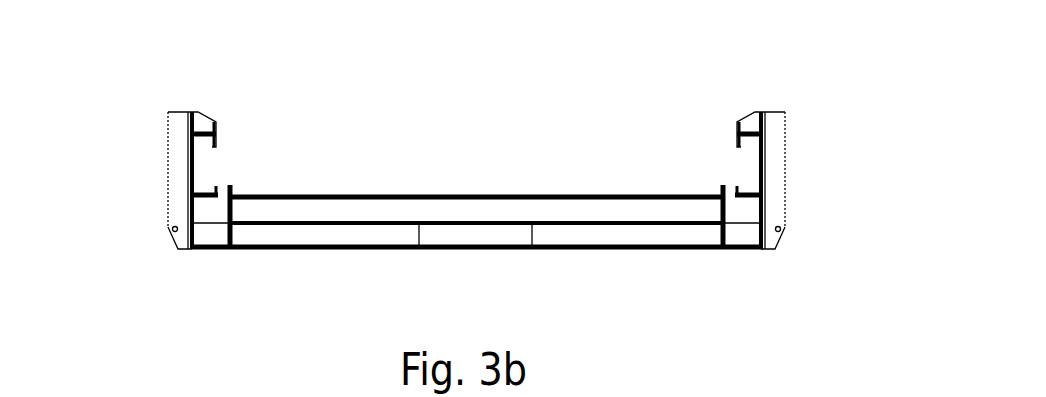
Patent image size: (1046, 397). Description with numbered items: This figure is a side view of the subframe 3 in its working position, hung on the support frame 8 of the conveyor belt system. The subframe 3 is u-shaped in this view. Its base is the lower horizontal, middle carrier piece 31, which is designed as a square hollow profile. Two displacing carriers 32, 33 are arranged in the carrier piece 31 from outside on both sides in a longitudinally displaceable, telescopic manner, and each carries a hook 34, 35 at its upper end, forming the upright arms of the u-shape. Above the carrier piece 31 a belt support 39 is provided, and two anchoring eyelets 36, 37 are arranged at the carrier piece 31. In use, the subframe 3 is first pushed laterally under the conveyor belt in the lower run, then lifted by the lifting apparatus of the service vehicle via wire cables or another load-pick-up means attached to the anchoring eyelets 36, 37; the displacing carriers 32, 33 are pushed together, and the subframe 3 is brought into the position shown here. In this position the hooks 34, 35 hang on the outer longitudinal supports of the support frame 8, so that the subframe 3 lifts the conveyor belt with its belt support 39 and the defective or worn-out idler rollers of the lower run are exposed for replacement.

The subframe 3 is at (370, 278).
The support frame 8 is at (207, 198).
The carrier piece 31 is at (492, 237).
The displacing carrier 32 is at (180, 180).
The displacing carrier 33 is at (773, 148).
The hook 34 is at (203, 120).
The hook 35 is at (755, 120).
The anchoring eyelet 36 is at (233, 190).
The anchoring eyelet 37 is at (722, 187).
The belt support 39 is at (508, 209).